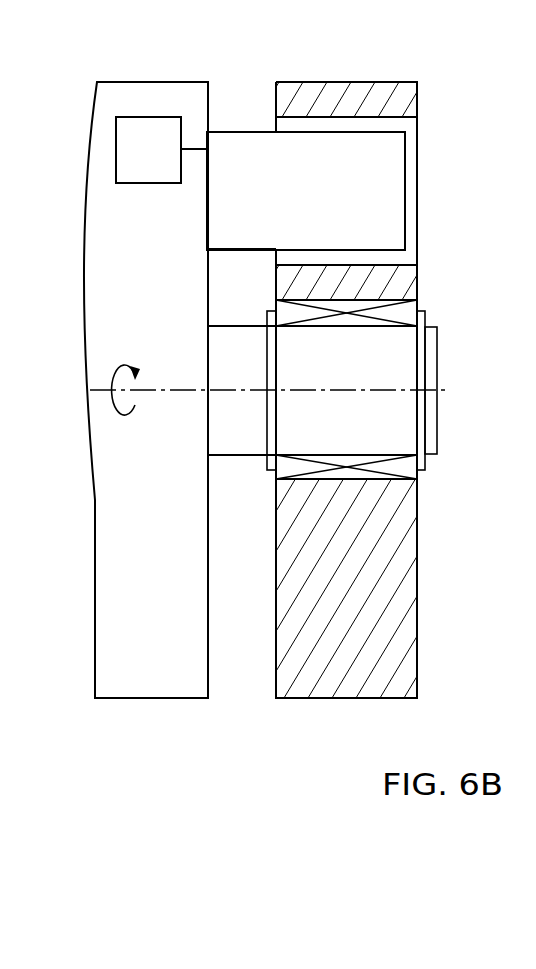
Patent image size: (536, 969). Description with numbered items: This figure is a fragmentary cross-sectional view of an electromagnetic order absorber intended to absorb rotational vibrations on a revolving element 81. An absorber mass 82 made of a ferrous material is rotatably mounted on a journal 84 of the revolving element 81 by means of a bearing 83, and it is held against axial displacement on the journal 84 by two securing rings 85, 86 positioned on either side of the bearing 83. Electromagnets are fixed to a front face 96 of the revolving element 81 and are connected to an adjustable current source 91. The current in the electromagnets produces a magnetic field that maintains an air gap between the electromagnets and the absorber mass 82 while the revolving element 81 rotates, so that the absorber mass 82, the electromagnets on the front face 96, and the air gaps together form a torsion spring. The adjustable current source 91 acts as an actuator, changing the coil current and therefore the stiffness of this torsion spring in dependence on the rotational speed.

The revolving element 81 is at (155, 668).
The absorber mass 82 is at (346, 662).
The bearing 83 is at (407, 312).
The journal 84 is at (430, 372).
The securing ring 85 is at (422, 462).
The securing ring 86 is at (272, 461).
The adjustable current source 91 is at (148, 160).
The front face 96 is at (208, 647).